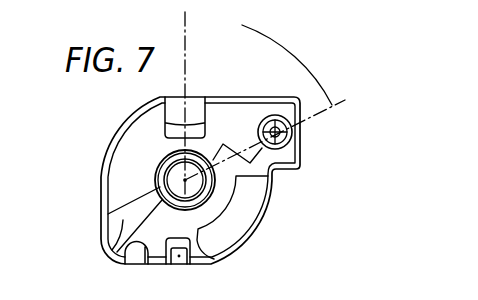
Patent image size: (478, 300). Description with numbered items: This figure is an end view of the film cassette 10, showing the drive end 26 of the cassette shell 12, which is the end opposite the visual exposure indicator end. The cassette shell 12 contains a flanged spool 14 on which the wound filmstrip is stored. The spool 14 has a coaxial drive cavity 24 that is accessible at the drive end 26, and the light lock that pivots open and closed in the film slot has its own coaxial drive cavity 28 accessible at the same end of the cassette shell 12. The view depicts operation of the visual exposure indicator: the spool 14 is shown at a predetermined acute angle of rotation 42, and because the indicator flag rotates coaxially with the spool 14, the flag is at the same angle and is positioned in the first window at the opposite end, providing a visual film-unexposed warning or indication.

The film cassette 10 is at (96, 161).
The cassette shell 12 is at (117, 191).
The flanged spool 14 is at (108, 214).
The coaxial drive cavity 24 is at (157, 163).
The drive end 26 is at (117, 238).
The coaxial drive cavity 28 is at (289, 141).
The predetermined acute angle of rotation 42 is at (192, 19).